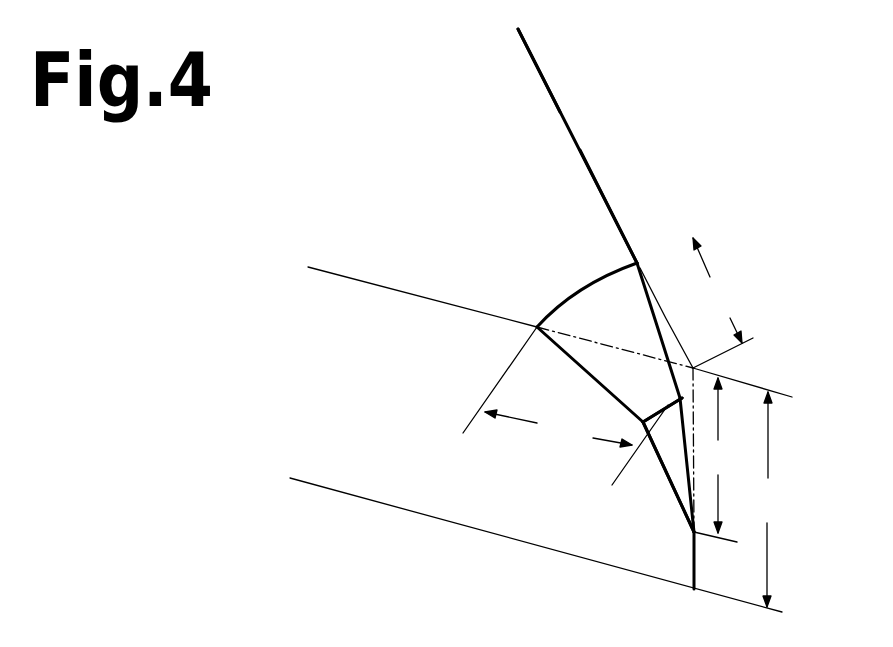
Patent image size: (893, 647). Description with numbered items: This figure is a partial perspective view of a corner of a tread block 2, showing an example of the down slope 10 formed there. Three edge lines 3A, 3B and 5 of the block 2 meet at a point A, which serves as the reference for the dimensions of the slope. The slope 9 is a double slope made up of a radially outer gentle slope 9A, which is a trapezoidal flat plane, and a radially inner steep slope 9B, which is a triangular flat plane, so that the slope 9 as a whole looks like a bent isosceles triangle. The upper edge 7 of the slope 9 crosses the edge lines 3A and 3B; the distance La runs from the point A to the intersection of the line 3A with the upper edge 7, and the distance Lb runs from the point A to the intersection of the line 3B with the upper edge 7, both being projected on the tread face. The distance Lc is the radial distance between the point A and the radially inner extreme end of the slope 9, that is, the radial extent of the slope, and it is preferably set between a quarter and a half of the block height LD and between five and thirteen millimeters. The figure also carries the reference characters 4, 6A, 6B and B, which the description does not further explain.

The block 2 is at (602, 142).
The edge line 3A is at (600, 183).
The edge line 3B is at (415, 297).
The blade body 4 is at (502, 163).
The edge line 5 is at (695, 558).
The first cutting face 6A is at (637, 232).
The second cutting face 6B is at (460, 483).
The upper edge of the slope 7 is at (610, 280).
The slope 9 is at (668, 465).
The radially outer gentle slope 9A is at (595, 374).
The radially inner steep slope 9B is at (677, 452).
The down slope 10 is at (643, 377).
The point A is at (693, 368).
The direction B is at (620, 323).
The distance La is at (717, 290).
The distance Lb is at (565, 406).
The radial distance Lc is at (716, 460).
The block height LD is at (772, 499).